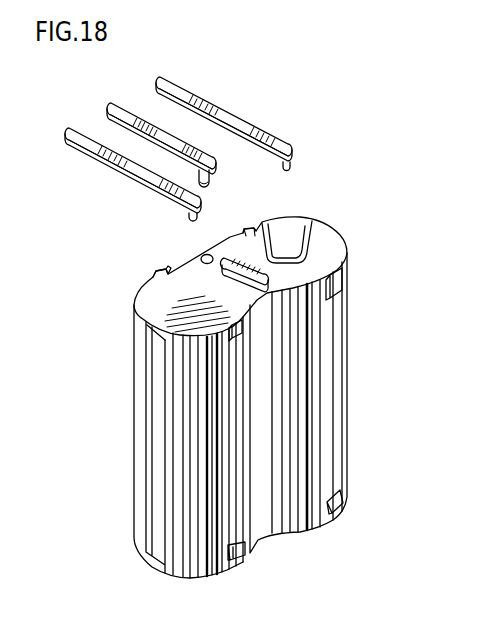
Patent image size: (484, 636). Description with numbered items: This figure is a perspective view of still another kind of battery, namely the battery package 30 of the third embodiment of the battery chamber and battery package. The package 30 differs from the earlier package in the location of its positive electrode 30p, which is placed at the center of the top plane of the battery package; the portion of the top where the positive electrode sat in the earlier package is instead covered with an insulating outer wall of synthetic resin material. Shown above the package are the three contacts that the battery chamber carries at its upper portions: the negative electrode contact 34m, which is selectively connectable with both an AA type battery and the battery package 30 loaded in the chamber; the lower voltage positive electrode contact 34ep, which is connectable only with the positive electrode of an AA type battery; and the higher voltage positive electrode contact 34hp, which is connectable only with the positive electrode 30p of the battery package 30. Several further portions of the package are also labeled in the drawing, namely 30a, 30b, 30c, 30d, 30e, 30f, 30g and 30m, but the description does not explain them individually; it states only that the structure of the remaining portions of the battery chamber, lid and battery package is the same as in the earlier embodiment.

The battery package 30 is at (348, 348).
The top face of housing 30a is at (335, 257).
The front tab 30b is at (233, 343).
The side tab 30c is at (338, 292).
The notch 30d is at (250, 232).
The projection 30e is at (158, 281).
The bottom tab 30f is at (238, 560).
The bottom side tab 30g is at (333, 512).
The U-shaped slot 30m is at (287, 252).
The positive electrode 30p is at (200, 257).
The negative electrode contact 34m is at (240, 123).
The higher voltage positive electrode contact 34hp is at (212, 170).
The lower voltage positive electrode contact 34ep is at (135, 168).